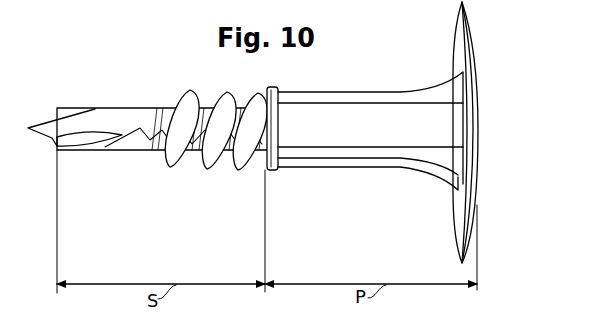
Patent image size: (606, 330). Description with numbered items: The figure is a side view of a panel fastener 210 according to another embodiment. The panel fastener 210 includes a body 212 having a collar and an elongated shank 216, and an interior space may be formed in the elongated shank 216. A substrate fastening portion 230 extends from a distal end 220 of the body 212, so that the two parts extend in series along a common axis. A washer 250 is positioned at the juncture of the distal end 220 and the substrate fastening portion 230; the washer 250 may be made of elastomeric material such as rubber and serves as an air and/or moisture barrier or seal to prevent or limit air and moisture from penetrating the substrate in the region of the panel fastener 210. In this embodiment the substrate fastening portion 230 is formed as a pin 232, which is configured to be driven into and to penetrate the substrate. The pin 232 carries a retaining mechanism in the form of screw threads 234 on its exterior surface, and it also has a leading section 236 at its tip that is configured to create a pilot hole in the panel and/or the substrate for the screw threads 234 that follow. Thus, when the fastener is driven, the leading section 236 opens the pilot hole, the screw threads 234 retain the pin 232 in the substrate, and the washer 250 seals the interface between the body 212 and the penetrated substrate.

The panel fastener 210 is at (480, 50).
The body 212 is at (473, 178).
The elongated shank 216 is at (392, 140).
The distal end 220 is at (285, 84).
The substrate fastening portion 230 is at (229, 97).
The pin 232 is at (117, 124).
The screw threads 234 is at (188, 91).
The leading section 236 is at (162, 170).
The washer 250 is at (270, 171).